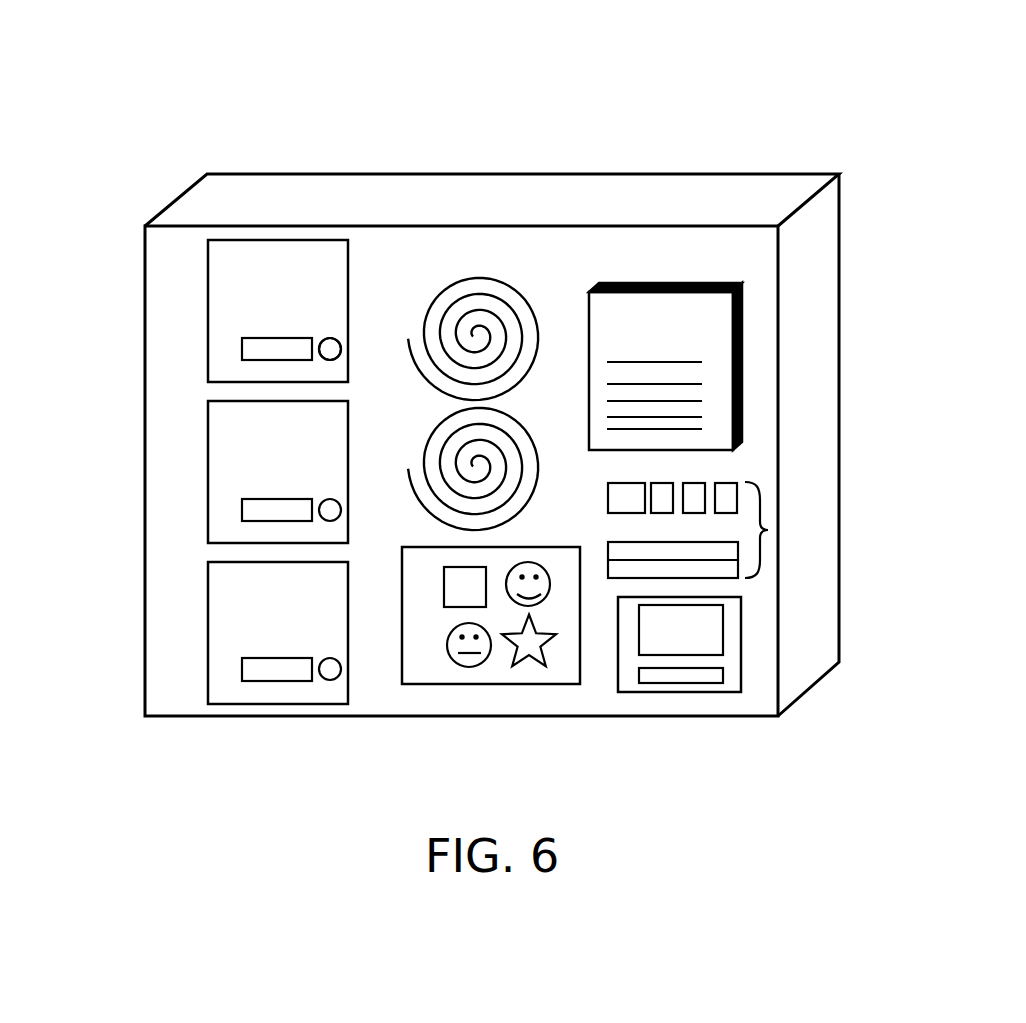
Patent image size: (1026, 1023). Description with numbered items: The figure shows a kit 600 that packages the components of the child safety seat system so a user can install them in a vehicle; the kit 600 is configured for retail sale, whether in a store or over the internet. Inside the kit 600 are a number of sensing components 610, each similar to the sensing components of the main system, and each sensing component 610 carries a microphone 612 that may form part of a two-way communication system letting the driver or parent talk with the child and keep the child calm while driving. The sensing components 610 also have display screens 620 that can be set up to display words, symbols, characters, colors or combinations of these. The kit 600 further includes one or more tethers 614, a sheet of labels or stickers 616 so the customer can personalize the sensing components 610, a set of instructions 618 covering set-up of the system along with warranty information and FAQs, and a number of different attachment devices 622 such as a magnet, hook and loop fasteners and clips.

The kit 600 is at (160, 110).
The sensing components 610 is at (208, 628).
The microphone 612 is at (333, 346).
The tethers 614 is at (485, 282).
The sheet of labels or stickers 616 is at (495, 675).
The set of instructions 618 is at (710, 340).
The display screens 620 is at (242, 502).
The attachment devices 622 is at (768, 530).